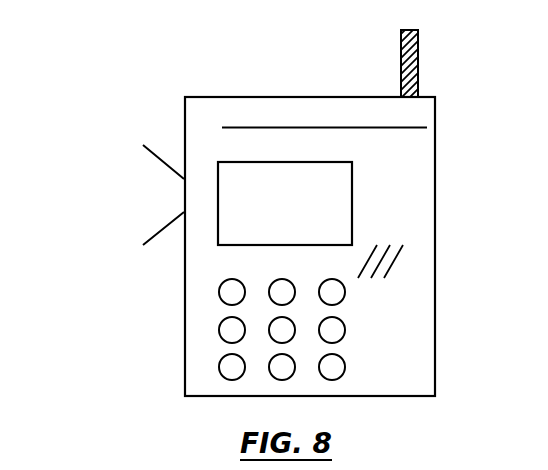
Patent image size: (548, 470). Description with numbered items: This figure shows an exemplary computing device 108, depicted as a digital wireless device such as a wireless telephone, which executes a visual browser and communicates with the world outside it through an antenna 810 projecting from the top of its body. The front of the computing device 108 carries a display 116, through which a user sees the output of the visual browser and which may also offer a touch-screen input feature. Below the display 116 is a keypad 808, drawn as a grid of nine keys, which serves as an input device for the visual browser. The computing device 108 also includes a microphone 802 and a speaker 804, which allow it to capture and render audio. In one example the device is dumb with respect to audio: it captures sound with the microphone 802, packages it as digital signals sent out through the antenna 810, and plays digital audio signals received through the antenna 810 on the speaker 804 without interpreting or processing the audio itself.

The computing device 108 is at (427, 154).
The display 116 is at (267, 230).
The antenna 810 is at (400, 61).
The speaker 804 is at (143, 194).
The microphone 802 is at (405, 260).
The keypad 808 is at (168, 278).